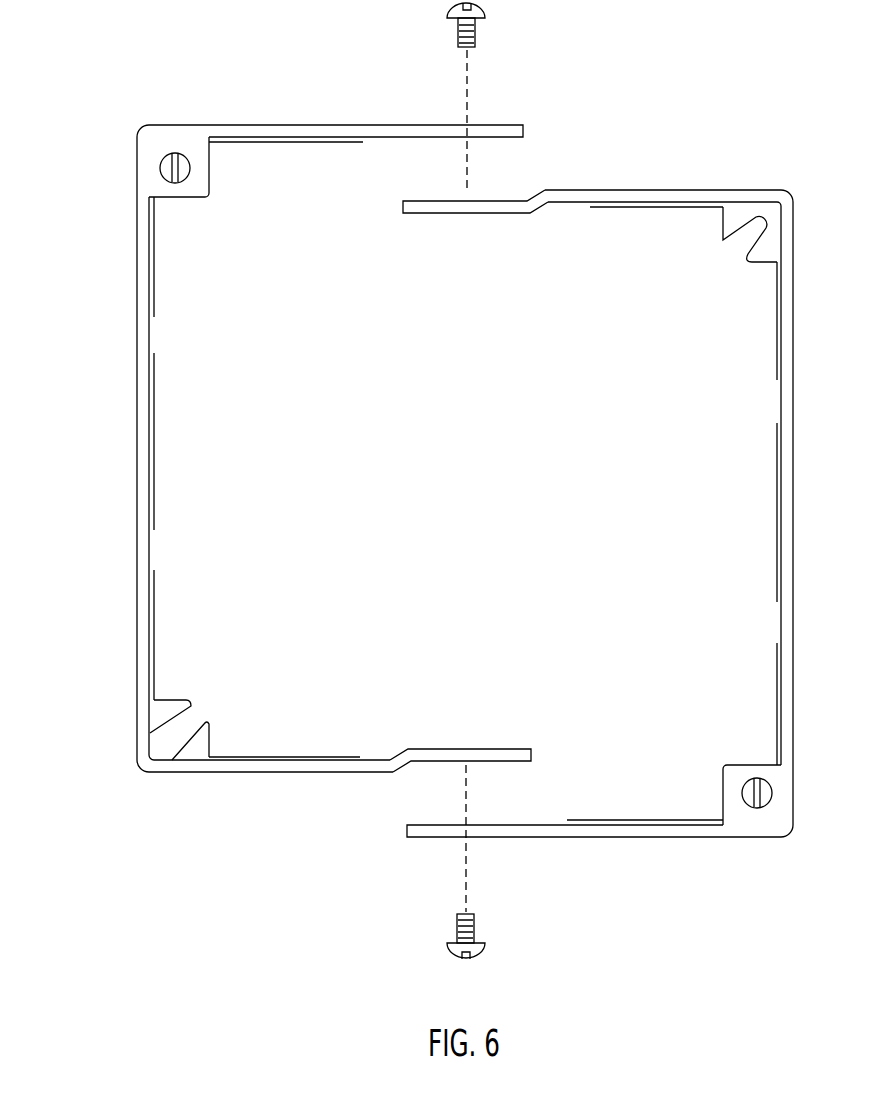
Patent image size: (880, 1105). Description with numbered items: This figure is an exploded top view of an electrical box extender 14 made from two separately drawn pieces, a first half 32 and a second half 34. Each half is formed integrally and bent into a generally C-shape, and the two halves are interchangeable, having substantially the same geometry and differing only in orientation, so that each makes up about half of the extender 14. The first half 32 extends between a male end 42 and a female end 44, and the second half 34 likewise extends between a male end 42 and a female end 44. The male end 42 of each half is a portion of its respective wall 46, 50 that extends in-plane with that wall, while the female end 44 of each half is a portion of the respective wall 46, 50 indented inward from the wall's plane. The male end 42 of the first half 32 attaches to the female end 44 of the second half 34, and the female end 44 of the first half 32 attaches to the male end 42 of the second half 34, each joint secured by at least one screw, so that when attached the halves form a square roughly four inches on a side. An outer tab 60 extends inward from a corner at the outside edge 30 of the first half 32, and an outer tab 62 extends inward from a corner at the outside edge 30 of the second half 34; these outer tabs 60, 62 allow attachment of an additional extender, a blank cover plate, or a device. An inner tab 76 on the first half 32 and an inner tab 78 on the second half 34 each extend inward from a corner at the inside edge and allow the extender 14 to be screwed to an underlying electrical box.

The electrical box extender 14 is at (78, 106).
The outside edge 30 is at (334, 135).
The first half 32 is at (138, 390).
The second half 34 is at (788, 400).
The male end 42 is at (509, 103).
The female end 44 is at (508, 228).
The wall 46 is at (140, 553).
The wall 50 is at (790, 474).
The outer tab 60 is at (200, 152).
The outer tab 62 is at (733, 808).
The inner tab 76 is at (175, 705).
The inner tab 78 is at (730, 223).